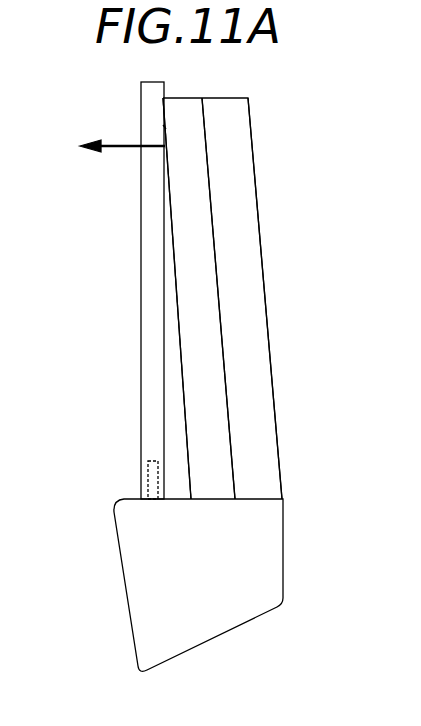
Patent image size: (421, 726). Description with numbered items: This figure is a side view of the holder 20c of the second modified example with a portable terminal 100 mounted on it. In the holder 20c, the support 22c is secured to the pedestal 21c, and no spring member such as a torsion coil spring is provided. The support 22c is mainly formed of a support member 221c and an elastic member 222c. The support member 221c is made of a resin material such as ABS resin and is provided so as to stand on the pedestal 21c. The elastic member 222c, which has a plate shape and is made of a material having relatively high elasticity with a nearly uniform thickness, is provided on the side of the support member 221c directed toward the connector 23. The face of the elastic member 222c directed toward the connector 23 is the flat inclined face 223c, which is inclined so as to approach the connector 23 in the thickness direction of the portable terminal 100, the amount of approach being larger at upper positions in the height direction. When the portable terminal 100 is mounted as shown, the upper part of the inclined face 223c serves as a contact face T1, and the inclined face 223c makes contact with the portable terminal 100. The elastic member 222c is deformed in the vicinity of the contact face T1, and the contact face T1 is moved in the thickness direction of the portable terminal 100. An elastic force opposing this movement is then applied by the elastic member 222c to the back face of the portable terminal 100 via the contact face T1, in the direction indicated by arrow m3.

The portable terminal 100 is at (150, 203).
The arrow indicating elastic force direction m3 is at (122, 132).
The contact face T1 is at (165, 127).
The holder 20c is at (302, 152).
The support 22c is at (229, 89).
The support member 221c is at (258, 330).
The elastic member 222c is at (190, 277).
The inclined face 223c is at (180, 352).
The connector 23 is at (148, 468).
The pedestal 21c is at (137, 604).